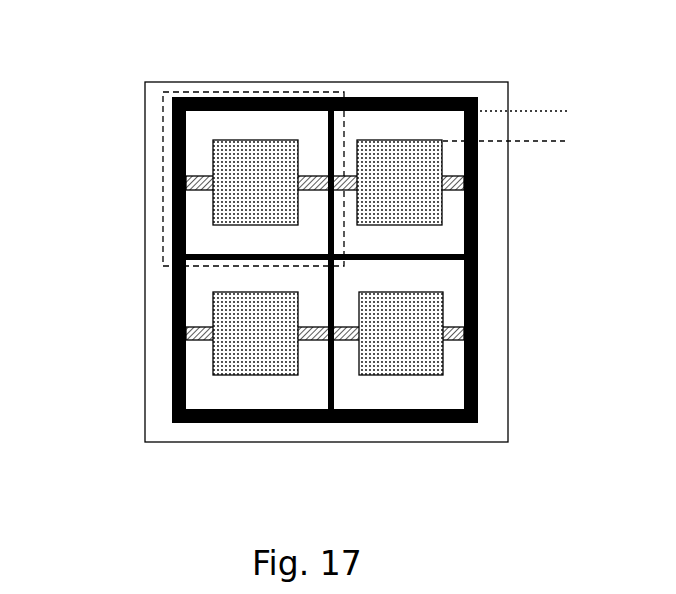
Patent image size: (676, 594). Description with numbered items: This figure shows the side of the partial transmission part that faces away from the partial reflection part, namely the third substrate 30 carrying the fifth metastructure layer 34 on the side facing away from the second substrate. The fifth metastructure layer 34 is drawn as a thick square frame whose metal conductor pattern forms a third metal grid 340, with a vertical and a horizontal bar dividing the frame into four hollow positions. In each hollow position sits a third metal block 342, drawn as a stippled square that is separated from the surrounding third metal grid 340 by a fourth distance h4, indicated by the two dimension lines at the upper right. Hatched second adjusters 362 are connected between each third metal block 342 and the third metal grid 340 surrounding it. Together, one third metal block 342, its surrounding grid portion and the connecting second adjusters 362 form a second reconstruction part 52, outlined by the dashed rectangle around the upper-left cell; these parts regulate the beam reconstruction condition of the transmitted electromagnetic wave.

The third substrate 30 is at (158, 320).
The second reconstruction part 52 is at (163, 148).
The fifth metastructure layer 34 is at (395, 88).
The third metal grid 340 is at (479, 260).
The third metal block 342 is at (247, 196).
The second adjuster 362 is at (449, 345).
The fourth distance h4 is at (519, 126).